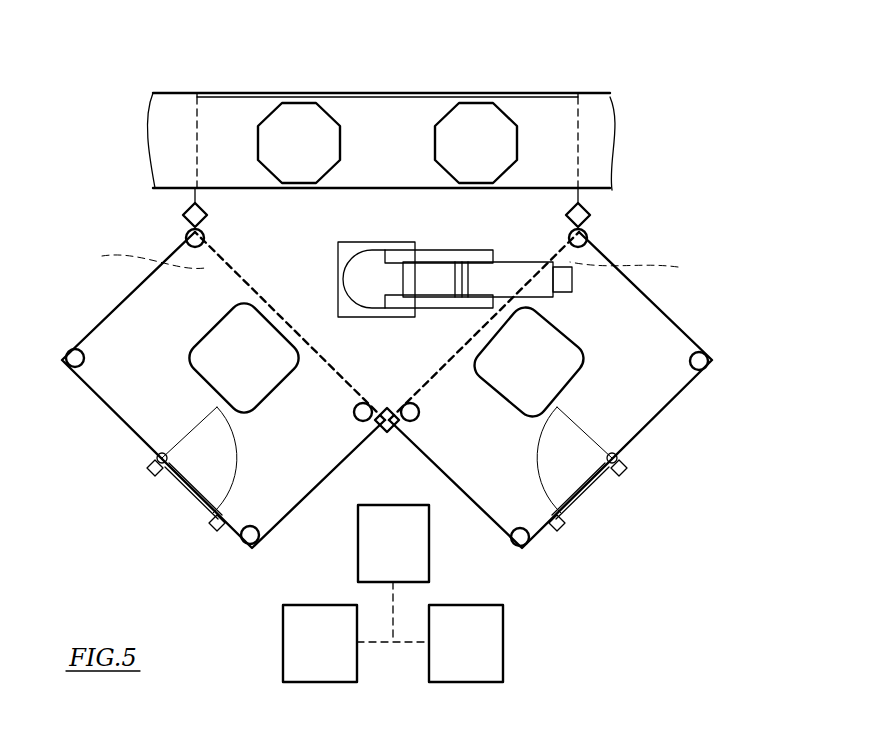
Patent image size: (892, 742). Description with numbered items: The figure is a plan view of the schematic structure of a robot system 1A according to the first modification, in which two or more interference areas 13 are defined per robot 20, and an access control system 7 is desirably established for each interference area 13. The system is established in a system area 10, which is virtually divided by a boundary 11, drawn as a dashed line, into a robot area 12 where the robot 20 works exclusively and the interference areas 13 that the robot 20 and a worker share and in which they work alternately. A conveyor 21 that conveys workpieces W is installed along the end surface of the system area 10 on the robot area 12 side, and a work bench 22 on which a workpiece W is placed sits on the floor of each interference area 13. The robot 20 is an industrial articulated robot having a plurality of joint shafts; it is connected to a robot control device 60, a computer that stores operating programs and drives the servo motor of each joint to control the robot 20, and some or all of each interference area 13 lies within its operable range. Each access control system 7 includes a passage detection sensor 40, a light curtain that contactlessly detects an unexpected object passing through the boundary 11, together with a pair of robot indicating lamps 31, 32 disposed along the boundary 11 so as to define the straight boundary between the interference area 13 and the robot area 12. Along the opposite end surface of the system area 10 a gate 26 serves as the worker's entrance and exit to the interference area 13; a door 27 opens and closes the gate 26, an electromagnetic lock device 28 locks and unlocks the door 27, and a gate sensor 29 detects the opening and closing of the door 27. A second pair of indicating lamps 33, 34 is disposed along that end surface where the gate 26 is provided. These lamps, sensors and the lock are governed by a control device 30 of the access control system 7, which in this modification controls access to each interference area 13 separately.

The system area 10 is at (200, 85).
The workpiece W is at (290, 103).
The conveyor 21 is at (580, 95).
The robot system 1A is at (665, 100).
The passage detection sensor 40 is at (172, 212).
The robot 20 is at (480, 243).
The robot area 12 is at (285, 253).
The indicating lamp 31 is at (183, 243).
The boundary 11 is at (391, 265).
The indicating lamp 33 is at (70, 350).
The interference area 13 is at (150, 331).
The work bench 22 is at (202, 385).
The access control system 7 is at (85, 432).
The gate sensor 29 is at (150, 470).
The door 27 is at (185, 490).
The gate 26 is at (197, 507).
The electromagnetic lock device 28 is at (213, 532).
The indicating lamp 32 is at (363, 421).
The indicating lamp 34 is at (258, 545).
The robot control device 60 is at (379, 556).
The control device 30 is at (306, 656).